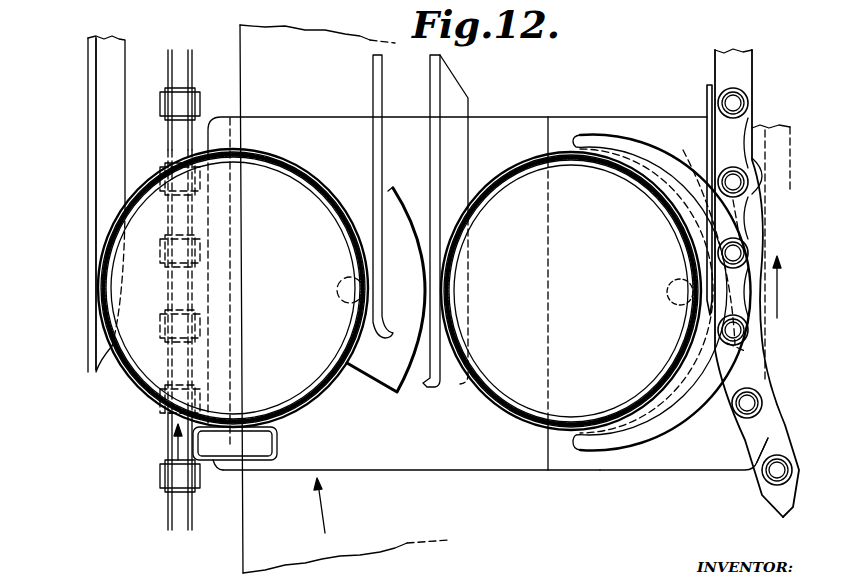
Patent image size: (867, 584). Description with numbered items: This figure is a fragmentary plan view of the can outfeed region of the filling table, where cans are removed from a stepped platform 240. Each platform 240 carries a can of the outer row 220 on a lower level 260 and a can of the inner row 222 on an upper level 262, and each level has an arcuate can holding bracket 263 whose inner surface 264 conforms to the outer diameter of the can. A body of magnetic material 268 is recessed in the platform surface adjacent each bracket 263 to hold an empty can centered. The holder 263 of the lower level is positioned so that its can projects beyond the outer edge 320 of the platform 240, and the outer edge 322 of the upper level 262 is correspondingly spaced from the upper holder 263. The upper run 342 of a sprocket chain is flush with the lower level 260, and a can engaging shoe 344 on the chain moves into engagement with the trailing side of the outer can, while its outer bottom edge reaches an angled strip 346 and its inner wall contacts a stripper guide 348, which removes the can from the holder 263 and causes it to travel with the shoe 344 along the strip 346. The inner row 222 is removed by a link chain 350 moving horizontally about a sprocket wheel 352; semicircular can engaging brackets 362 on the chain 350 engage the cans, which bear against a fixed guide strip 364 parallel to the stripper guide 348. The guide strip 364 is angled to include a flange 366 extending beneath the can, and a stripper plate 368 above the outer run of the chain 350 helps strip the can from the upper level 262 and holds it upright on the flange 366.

The outer row 220 is at (281, 128).
The inner row 222 is at (560, 127).
The platform 240 is at (587, 127).
The lower level 260 is at (388, 452).
The upper level 262 is at (640, 455).
The can holding bracket 263 is at (393, 188).
The inner surface 264 is at (357, 245).
The body of magnetic material 268 is at (338, 302).
The outer edge 320 is at (135, 385).
The outer edge 322 is at (483, 390).
The upper run 342 is at (162, 102).
The can engaging shoe 344 is at (223, 447).
The angled strip 346 is at (90, 243).
The stripper guide 348 is at (372, 105).
The link chain 350 is at (773, 473).
The sprocket wheel 352 is at (777, 415).
The can engaging bracket 362 is at (618, 428).
The guide strip 364 is at (430, 92).
The flange 366 is at (453, 175).
The stripper plate 368 is at (707, 107).